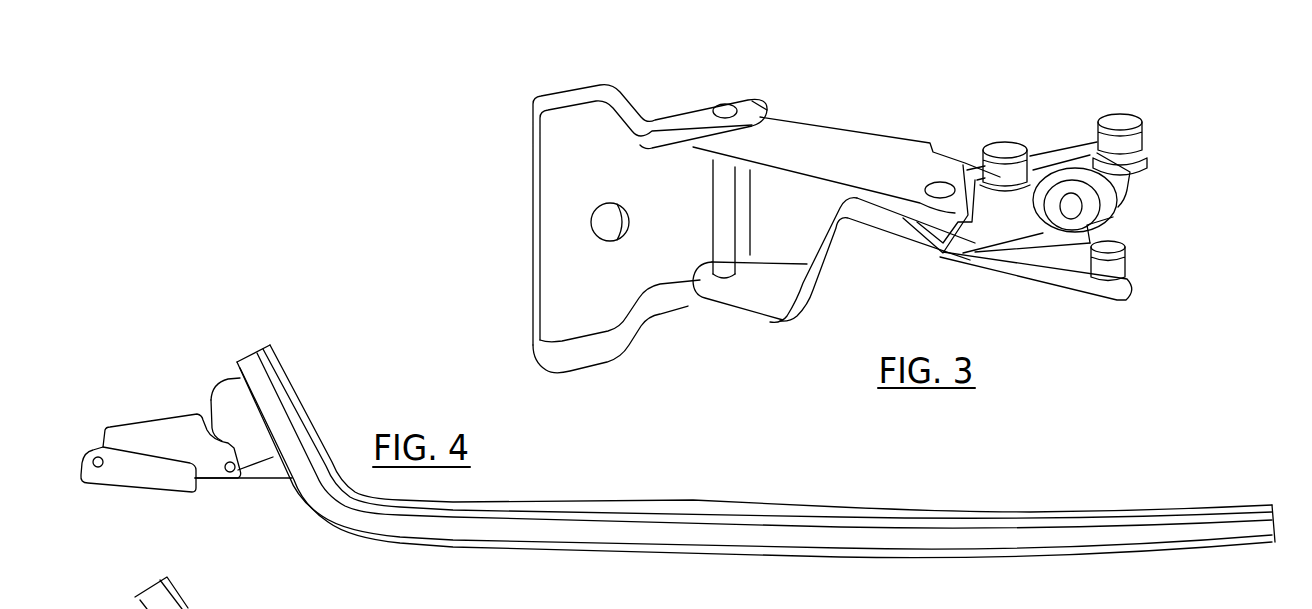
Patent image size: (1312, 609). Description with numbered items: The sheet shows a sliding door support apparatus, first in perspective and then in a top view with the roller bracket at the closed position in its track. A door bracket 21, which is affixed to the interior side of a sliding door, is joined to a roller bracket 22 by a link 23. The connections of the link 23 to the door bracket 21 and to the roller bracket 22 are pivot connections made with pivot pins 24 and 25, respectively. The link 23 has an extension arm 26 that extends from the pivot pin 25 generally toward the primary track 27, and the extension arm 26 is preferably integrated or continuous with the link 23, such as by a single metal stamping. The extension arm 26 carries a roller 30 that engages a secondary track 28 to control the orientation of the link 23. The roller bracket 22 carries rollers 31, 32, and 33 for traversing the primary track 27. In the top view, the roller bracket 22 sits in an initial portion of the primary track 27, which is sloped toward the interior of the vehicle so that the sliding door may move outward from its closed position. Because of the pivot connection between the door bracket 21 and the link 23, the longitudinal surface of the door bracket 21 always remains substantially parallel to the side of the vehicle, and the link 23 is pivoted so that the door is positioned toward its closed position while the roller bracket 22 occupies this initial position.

In FIG. 3, the door bracket 21 is at (582, 95).
In FIG. 4, the door bracket 21 is at (132, 482).
In FIG. 3, the roller bracket 22 is at (1131, 192).
In FIG. 4, the roller bracket 22 is at (220, 393).
In FIG. 3, the link 23 is at (852, 130).
In FIG. 4, the link 23 is at (133, 435).
In FIG. 3, the pivot pin 24 is at (726, 108).
In FIG. 3, the pivot pin 25 is at (941, 182).
In FIG. 4, the pivot pin 25 is at (230, 467).
In FIG. 3, the extension arm 26 is at (1053, 283).
In FIG. 4, the extension arm 26 is at (267, 478).
In FIG. 4, the primary track 27 is at (533, 537).
In FIG. 4, the secondary track 28 is at (692, 497).
In FIG. 3, the roller 30 is at (1127, 259).
In FIG. 3, the roller 31 is at (1067, 178).
In FIG. 3, the roller 32 is at (1002, 147).
In FIG. 3, the roller 33 is at (1122, 120).